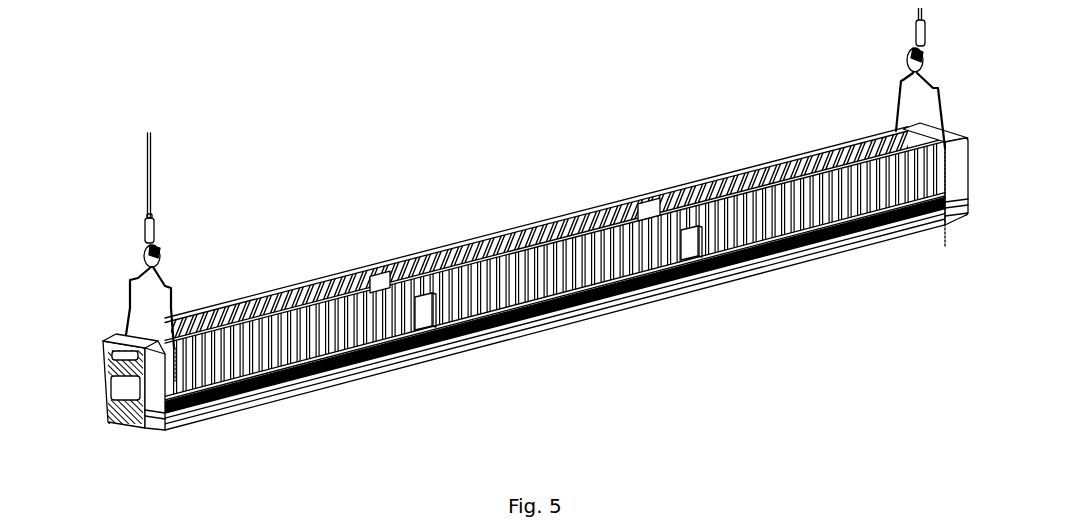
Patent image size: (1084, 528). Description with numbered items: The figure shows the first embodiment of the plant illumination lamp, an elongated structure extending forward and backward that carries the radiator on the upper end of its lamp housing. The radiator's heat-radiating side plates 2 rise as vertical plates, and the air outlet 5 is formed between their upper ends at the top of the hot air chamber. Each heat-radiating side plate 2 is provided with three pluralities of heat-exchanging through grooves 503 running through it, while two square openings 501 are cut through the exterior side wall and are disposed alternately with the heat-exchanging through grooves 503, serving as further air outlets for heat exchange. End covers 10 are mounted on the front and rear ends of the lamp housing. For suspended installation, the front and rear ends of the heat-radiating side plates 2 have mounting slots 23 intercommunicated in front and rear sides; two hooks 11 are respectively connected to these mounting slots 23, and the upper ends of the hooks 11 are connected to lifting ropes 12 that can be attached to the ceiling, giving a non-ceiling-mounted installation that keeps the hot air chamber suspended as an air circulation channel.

The heat-radiating side plate 2 is at (505, 227).
The air outlet 5 is at (375, 272).
The opening 501 is at (382, 277).
The heat-exchanging through groove 503 is at (262, 282).
The end cover 10 is at (97, 355).
The hook 11 is at (122, 283).
The lifting rope 12 is at (138, 192).
The mounting slot 23 is at (167, 373).